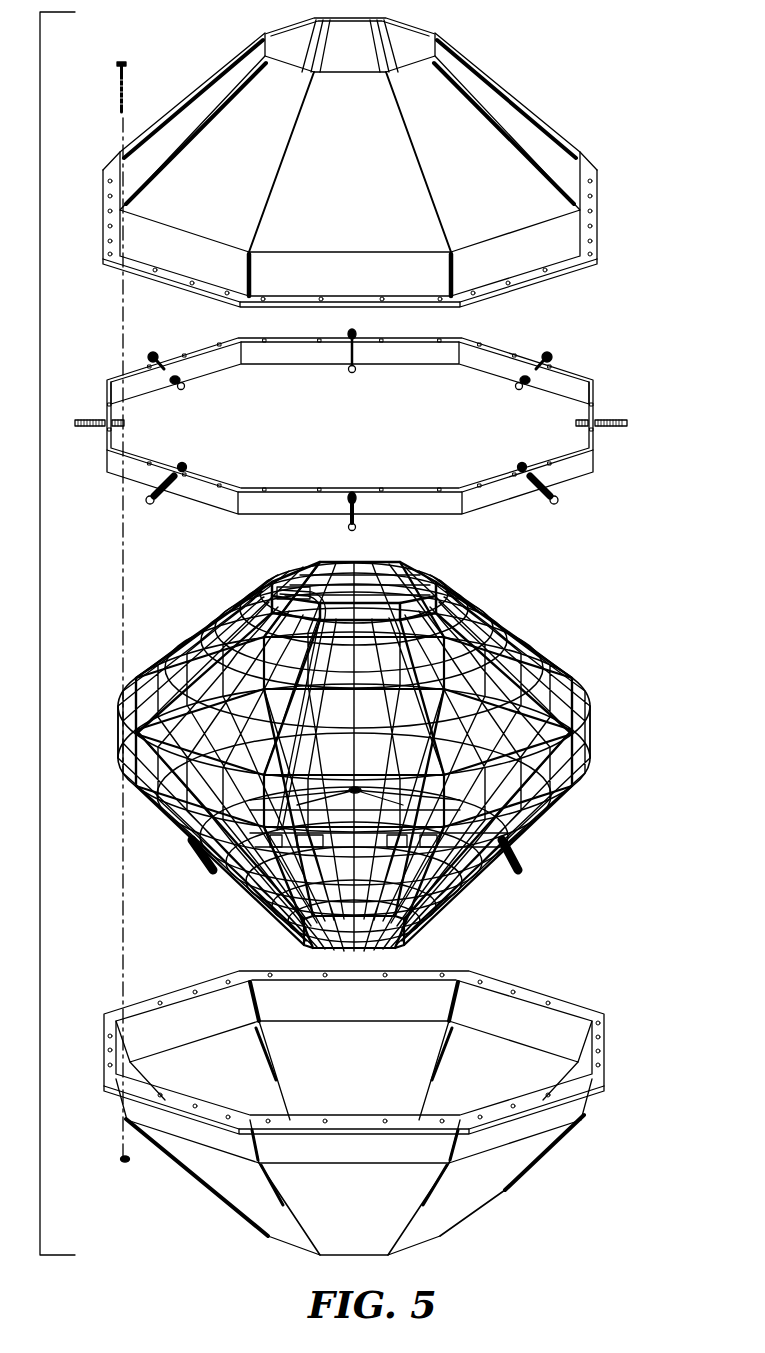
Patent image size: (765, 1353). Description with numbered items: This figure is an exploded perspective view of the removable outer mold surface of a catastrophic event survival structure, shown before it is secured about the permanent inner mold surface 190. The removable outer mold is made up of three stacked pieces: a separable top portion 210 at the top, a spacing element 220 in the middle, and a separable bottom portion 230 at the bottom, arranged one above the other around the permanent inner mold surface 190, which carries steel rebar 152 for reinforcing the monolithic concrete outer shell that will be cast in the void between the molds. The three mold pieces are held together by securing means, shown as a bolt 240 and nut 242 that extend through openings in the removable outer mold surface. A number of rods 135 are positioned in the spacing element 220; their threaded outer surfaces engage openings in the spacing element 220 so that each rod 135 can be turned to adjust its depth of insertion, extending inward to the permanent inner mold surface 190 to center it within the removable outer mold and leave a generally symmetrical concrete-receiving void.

The separable top portion 210 is at (538, 88).
The spacing element 220 is at (567, 372).
The separable bottom portion 230 is at (542, 1194).
The rods 135 is at (602, 418).
The permanent inner mold surface 190 is at (512, 668).
The steel rebar 152 is at (478, 737).
The bolt 240 is at (118, 68).
The nut 242 is at (121, 1161).